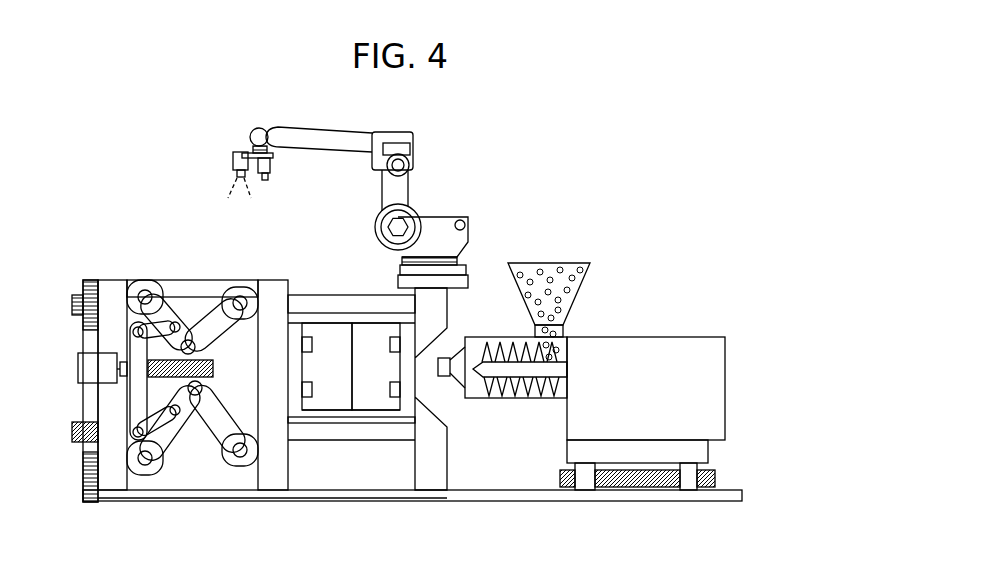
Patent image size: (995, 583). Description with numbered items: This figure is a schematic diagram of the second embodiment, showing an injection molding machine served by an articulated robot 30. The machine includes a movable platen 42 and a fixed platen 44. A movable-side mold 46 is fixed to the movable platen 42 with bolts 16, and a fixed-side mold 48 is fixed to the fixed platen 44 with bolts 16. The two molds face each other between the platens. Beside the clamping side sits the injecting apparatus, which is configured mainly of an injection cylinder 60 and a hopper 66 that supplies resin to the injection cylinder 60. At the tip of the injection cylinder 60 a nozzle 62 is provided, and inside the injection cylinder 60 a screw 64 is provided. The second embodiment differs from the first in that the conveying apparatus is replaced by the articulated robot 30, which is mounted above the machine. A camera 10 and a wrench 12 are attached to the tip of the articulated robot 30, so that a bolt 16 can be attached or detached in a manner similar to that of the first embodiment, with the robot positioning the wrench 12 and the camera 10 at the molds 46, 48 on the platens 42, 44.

The camera 10 is at (233, 157).
The wrench 12 is at (273, 170).
The bolts 16 is at (312, 347).
The articulated robot 30 is at (318, 207).
The movable platen 42 is at (273, 480).
The fixed platen 44 is at (440, 480).
The movable-side mold 46 is at (312, 415).
The fixed-side mold 48 is at (388, 415).
The injection cylinder 60 is at (515, 400).
The nozzle 62 is at (444, 380).
The screw 64 is at (550, 398).
The hopper 66 is at (551, 263).